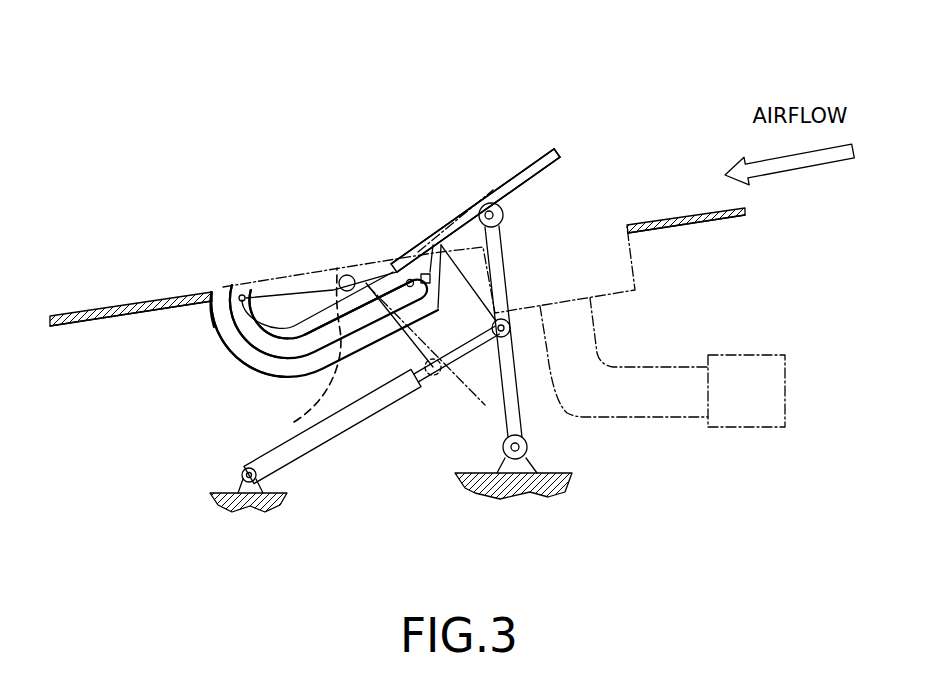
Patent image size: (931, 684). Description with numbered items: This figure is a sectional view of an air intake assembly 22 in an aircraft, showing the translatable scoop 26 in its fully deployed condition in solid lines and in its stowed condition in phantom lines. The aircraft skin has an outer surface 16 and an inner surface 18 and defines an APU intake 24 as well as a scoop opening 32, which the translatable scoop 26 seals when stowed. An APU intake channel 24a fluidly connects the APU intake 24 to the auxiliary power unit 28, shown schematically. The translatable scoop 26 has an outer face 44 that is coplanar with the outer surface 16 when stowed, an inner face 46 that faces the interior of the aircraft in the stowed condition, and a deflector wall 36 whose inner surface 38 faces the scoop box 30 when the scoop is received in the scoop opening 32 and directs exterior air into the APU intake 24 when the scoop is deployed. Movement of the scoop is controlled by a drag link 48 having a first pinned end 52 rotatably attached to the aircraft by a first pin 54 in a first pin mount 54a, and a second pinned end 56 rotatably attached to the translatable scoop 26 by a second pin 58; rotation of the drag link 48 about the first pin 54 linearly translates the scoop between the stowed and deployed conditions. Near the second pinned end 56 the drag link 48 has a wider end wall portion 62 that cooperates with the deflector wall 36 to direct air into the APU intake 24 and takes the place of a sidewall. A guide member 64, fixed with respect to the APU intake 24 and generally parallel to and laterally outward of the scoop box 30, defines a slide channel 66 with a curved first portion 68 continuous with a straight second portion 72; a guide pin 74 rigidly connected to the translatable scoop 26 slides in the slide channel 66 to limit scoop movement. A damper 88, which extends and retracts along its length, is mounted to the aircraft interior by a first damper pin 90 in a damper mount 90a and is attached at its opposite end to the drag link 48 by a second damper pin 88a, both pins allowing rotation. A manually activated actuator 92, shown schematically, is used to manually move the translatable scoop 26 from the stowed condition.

The outer surface 16 is at (62, 314).
The inner surface 18 is at (62, 328).
The air intake assembly 22 is at (370, 145).
The auxiliary power unit intake 24 is at (578, 247).
The auxiliary power unit intake channel 24a is at (640, 398).
The translatable scoop 26 is at (512, 178).
The auxiliary power unit 28 is at (762, 410).
The scoop box 30 is at (218, 340).
The scoop opening 32 is at (213, 282).
The deflector wall 36 is at (506, 185).
The inner surface 38 is at (512, 192).
The outer face 44 is at (550, 147).
The inner face 46 is at (565, 160).
The drag link 48 is at (463, 404).
The first pinned end 52 is at (480, 468).
The first pin 54 is at (520, 447).
The first pin mount 54a is at (540, 466).
The second pinned end 56 is at (316, 294).
The second pin 58 is at (340, 278).
The end wall portion 62 is at (300, 355).
The guide member 64 is at (276, 362).
The slide channel 66 is at (266, 342).
The first portion 68 is at (240, 350).
The second portion 72 is at (386, 291).
The guide pin 74 is at (236, 302).
The damper 88 is at (317, 448).
The second damper pin 88a is at (506, 322).
The first damper pin 90 is at (241, 476).
The damper mount 90a is at (215, 493).
The manually activated actuator 92 is at (425, 272).